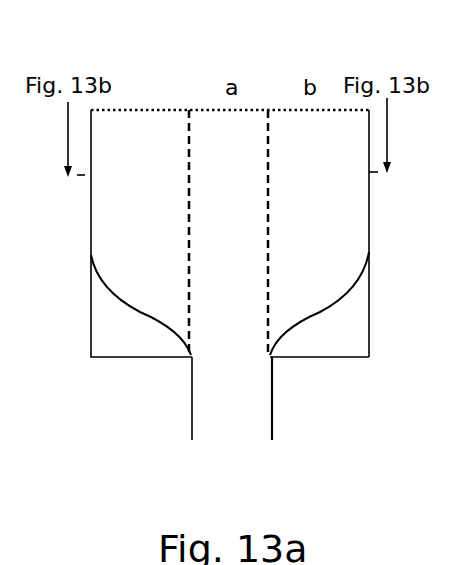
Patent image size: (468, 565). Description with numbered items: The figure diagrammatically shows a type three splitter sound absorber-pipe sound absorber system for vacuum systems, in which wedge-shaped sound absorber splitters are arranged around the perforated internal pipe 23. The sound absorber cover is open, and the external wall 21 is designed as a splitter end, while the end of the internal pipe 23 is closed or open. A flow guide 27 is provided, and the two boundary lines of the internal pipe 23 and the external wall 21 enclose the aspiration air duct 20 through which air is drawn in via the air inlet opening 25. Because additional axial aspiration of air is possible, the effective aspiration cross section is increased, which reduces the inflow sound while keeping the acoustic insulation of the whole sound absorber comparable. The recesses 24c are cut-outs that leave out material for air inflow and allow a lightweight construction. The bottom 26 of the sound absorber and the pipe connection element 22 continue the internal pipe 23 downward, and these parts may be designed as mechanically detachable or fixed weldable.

The aspiration air duct 20 is at (222, 133).
The external wall 21 is at (369, 231).
The pipe connection element 22 is at (190, 400).
The internal pipe 23 is at (264, 134).
The recesses 24c is at (449, 280).
The air inlet opening 25 is at (218, 109).
The bottom of the sound absorber 26 is at (310, 360).
The flow guide 27 is at (351, 327).